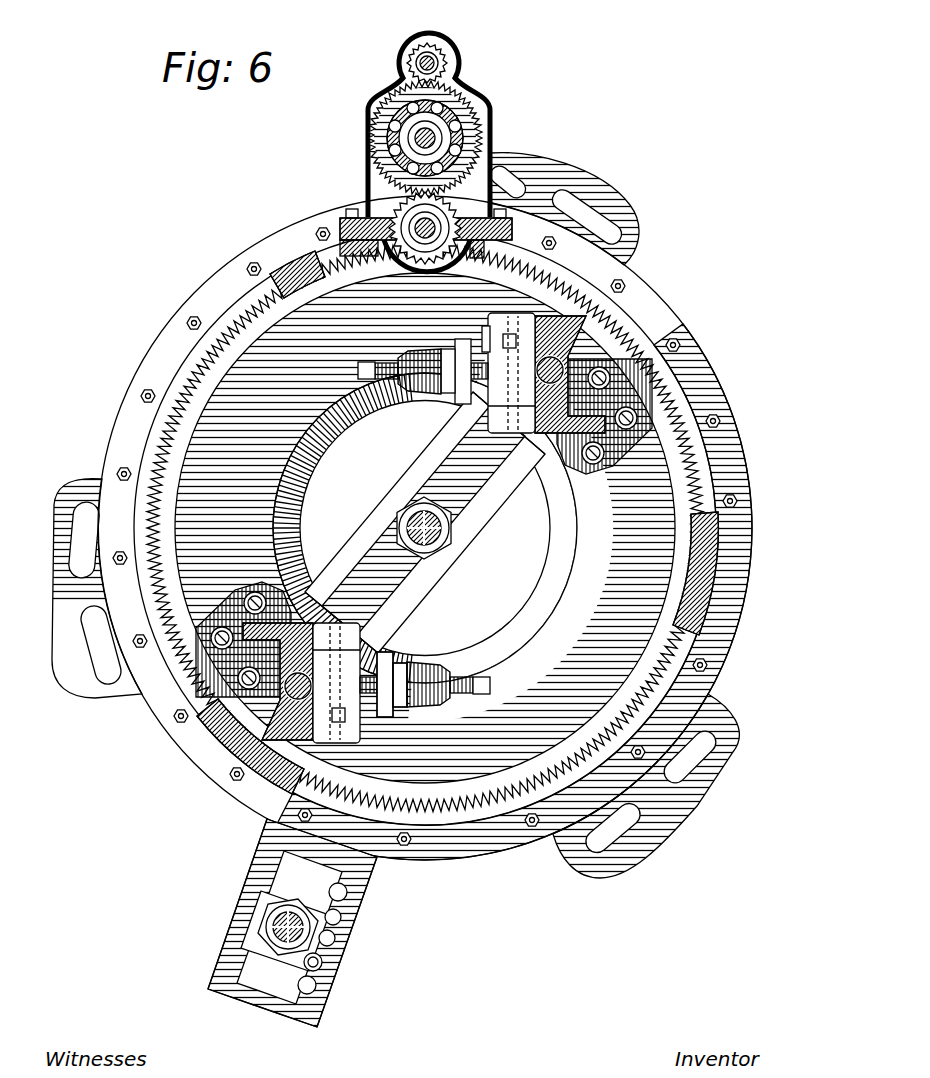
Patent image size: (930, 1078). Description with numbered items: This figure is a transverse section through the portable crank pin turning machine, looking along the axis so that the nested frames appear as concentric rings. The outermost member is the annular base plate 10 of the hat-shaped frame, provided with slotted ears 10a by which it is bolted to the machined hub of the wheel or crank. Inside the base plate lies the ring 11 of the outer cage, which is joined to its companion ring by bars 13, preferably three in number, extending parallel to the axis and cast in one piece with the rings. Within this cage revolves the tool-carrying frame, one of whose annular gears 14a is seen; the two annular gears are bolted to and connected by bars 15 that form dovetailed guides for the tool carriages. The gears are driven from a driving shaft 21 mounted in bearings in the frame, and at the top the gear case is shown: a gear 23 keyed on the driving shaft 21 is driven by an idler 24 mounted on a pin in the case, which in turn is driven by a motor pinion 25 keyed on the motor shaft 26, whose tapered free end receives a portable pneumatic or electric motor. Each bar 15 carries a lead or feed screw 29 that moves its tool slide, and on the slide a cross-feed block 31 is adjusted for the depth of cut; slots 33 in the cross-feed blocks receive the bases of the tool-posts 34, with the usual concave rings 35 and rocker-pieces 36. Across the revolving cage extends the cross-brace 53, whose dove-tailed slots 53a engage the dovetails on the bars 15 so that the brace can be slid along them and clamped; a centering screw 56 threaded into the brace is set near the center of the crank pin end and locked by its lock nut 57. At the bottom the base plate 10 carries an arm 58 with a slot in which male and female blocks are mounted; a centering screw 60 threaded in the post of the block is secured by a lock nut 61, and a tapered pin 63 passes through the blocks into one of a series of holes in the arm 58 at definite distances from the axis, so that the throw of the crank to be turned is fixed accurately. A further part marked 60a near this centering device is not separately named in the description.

The base plate 10 is at (140, 360).
The slotted ears 10a is at (585, 175).
The ring 11 is at (471, 815).
The bars 13 is at (292, 272).
The annular gear 14a is at (670, 647).
The bars 15 is at (605, 322).
The driving shaft 21 is at (450, 222).
The gear 23 is at (397, 203).
The idler 24 is at (464, 142).
The motor pinion 25 is at (460, 62).
The motor shaft 26 is at (407, 55).
The lead or feed screw 29 is at (590, 347).
The cross-feed block 31 is at (493, 333).
The slots 33 is at (486, 330).
The tool-posts 34 is at (433, 362).
The concave rings 35 is at (380, 658).
The rocker-pieces 36 is at (400, 663).
The cross-brace 53 is at (460, 480).
The dove-tailed slots 53a is at (552, 433).
The centering screw 56 is at (432, 548).
The lock nut 57 is at (408, 514).
The arm 58 is at (362, 878).
The centering screw 60 is at (320, 945).
The clamp plate 60a is at (262, 918).
The lock nut 61 is at (253, 940).
The tapered pin 63 is at (327, 980).